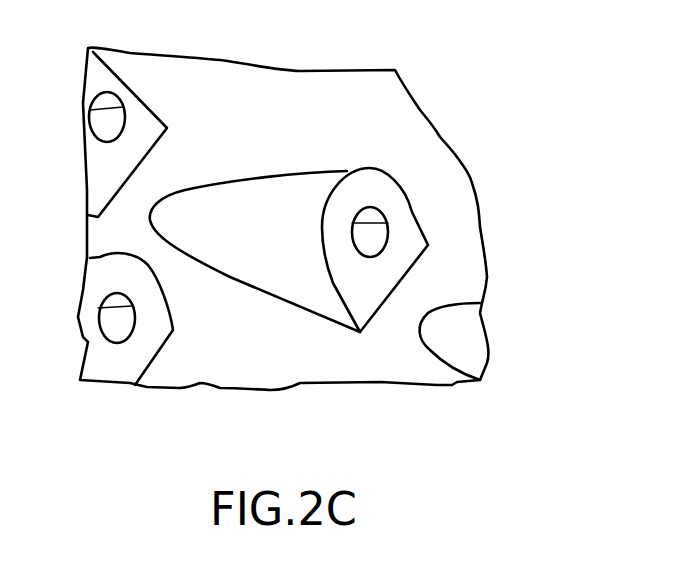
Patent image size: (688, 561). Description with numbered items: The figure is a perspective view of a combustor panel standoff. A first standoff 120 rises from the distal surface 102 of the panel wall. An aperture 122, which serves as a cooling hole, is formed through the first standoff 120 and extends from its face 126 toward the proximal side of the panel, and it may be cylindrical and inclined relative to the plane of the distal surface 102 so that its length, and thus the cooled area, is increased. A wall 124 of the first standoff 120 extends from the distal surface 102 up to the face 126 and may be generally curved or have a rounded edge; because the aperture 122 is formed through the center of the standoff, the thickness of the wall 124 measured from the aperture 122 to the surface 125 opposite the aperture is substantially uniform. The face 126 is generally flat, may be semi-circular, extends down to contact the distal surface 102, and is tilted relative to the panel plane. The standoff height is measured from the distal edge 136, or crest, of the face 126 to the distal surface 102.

The distal surface 102 is at (251, 347).
The first standoff 120 is at (277, 142).
The aperture 122 is at (388, 217).
The wall 124 is at (244, 200).
The surface 125 is at (282, 258).
The face 126 is at (382, 293).
The distal edge 136 is at (343, 170).